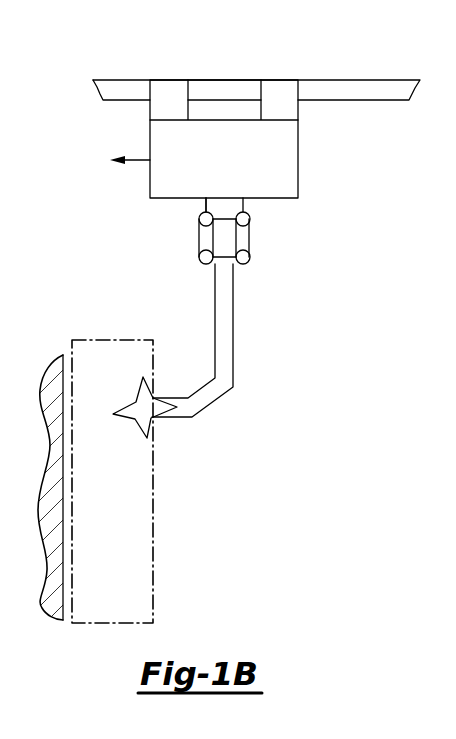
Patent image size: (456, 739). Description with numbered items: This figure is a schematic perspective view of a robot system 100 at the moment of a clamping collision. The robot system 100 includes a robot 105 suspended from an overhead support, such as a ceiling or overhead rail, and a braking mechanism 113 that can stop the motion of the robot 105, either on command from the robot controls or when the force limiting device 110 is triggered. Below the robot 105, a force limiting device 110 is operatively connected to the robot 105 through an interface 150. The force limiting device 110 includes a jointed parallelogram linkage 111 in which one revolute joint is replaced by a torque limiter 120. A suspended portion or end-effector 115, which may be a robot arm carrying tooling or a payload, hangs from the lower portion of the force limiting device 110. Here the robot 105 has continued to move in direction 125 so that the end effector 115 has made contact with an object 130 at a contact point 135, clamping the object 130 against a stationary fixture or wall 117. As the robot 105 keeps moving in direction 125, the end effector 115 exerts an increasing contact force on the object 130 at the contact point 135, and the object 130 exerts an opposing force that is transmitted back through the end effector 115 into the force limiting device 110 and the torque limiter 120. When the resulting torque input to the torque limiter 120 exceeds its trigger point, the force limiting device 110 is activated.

The robot system 100 is at (410, 154).
The braking mechanism 113 is at (280, 92).
The robot 105 is at (283, 167).
The direction 125 is at (140, 160).
The force limiting device 110 is at (268, 227).
The jointed parallelogram linkage 111 is at (249, 241).
The torque limiter 120 is at (206, 219).
The interface 150 is at (220, 203).
The end-effector 115 is at (223, 326).
The contact point 135 is at (166, 429).
The object 130 is at (188, 492).
The wall 117 is at (53, 568).